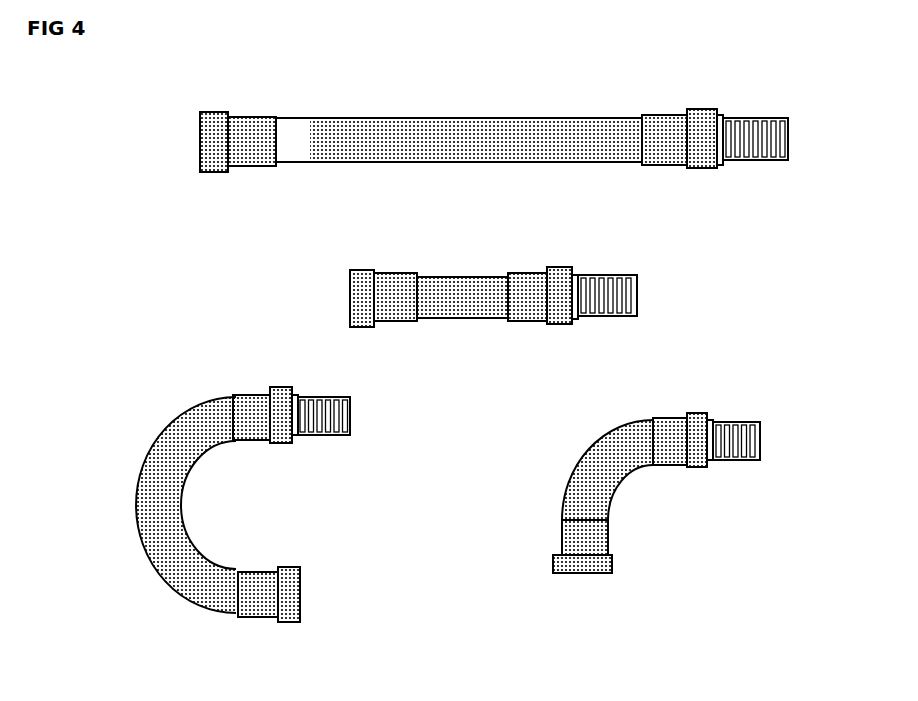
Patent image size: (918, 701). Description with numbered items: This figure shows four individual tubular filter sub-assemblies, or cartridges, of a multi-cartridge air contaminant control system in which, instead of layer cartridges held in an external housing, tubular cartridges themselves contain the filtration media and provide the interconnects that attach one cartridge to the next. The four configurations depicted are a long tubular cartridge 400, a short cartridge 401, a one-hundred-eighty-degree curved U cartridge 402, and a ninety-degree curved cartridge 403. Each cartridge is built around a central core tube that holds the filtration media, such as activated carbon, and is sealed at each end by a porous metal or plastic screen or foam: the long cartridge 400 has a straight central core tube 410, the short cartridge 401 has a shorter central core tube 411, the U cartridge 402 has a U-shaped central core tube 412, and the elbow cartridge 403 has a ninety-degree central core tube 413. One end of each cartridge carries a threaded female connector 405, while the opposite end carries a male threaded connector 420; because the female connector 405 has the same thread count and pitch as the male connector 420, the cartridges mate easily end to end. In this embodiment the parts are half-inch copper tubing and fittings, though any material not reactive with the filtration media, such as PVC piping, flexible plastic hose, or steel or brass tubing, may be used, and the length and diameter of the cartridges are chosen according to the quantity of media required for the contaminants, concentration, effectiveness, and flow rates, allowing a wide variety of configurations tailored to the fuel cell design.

The long tubular cartridge 400 is at (592, 98).
The short cartridge 401 is at (497, 266).
The 180 degree curved ("U") cartridge 402 is at (163, 408).
The 90 degree curved cartridge 403 is at (588, 436).
The threaded female connector 405 is at (233, 118).
The central core tube 410 is at (420, 118).
The central core tube 411 is at (432, 277).
The central core tube 412 is at (207, 553).
The central core tube 413 is at (622, 487).
The male threaded connector 420 is at (707, 110).